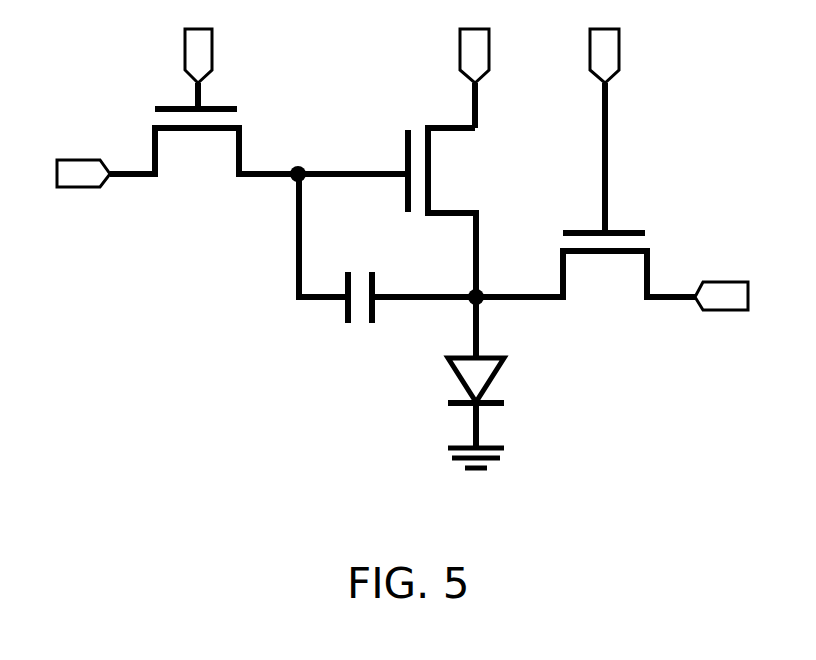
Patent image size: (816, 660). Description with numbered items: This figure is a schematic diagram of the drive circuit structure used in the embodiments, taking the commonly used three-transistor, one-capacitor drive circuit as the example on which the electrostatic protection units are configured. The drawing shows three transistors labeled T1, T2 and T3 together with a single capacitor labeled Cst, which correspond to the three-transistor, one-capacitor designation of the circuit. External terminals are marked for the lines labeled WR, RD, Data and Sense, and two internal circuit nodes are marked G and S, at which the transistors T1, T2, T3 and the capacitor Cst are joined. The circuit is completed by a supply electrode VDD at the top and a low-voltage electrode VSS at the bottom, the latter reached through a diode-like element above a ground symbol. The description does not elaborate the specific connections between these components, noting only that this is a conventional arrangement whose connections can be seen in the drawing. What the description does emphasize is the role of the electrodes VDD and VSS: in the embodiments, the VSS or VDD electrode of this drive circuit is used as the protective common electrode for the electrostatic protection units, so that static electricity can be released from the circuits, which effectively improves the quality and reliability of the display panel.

The write control line WR is at (232, 68).
The second transistor (write transistor) T2 is at (204, 150).
The data line Data is at (93, 154).
The gate node G is at (346, 211).
The VDD electrode VDD is at (435, 77).
The first transistor (driving transistor) T1 is at (451, 212).
The read control line RD is at (634, 129).
The third transistor (sense transistor) T3 is at (585, 276).
The sense line Sense is at (715, 278).
The storage capacitor Cst is at (405, 280).
The source node S is at (488, 279).
The VSS electrode VSS is at (510, 455).